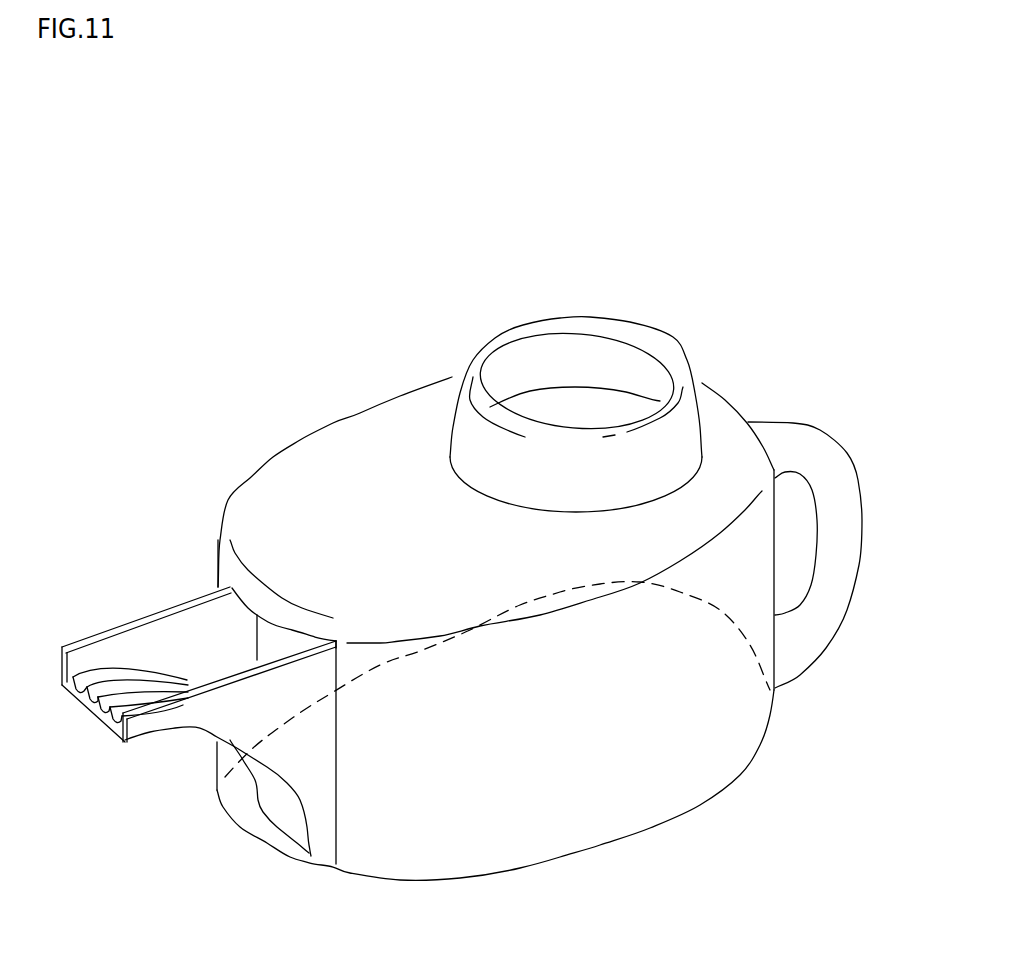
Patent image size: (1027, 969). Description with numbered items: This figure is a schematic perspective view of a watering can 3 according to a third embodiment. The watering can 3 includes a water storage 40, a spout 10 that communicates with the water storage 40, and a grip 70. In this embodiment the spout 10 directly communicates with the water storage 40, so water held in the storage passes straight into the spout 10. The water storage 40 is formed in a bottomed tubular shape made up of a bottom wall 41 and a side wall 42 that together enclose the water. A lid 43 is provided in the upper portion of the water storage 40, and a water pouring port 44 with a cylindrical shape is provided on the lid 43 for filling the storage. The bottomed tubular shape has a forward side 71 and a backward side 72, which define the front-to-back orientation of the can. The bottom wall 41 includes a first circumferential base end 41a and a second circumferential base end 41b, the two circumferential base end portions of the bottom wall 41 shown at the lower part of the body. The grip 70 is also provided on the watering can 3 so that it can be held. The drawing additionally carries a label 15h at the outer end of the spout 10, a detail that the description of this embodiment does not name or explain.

The watering can 3 is at (767, 355).
The spout 10 is at (145, 607).
The grooves 15h is at (108, 713).
The water storage 40 is at (380, 404).
The bottom wall 41 is at (520, 788).
The first circumferential base end 41a is at (490, 872).
The second circumferential base end 41b is at (275, 832).
The side wall 42 is at (722, 580).
The lid 43 is at (364, 486).
The water pouring port 44 is at (590, 357).
The grip 70 is at (835, 592).
The forward side 71 is at (68, 416).
The backward side 72 is at (58, 427).